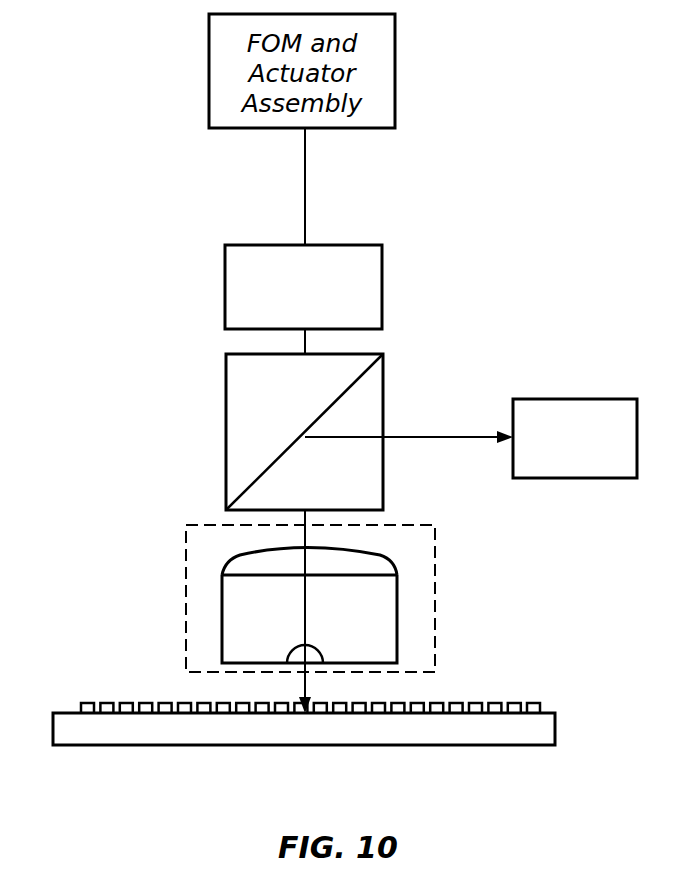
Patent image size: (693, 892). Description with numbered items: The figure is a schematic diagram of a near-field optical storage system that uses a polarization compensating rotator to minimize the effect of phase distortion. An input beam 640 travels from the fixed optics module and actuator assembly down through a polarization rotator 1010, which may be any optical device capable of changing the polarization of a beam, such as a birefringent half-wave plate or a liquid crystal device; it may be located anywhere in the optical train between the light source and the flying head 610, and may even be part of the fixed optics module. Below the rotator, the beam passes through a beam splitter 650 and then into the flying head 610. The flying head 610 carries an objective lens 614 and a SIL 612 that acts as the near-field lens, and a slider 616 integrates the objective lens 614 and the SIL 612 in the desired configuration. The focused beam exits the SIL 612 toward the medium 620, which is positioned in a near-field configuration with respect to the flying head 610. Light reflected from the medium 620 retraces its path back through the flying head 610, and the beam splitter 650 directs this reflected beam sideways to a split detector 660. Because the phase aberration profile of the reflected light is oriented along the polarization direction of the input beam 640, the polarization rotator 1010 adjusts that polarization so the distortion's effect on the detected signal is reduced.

The input beam 640 is at (305, 215).
The polarization compensating rotator 1010 is at (382, 297).
The beam splitter 650 is at (226, 415).
The split detector 660 is at (575, 399).
The flying head 610 is at (186, 562).
The SIL 612 is at (318, 650).
The objective lens 614 is at (378, 557).
The slider 616 is at (222, 618).
The medium 620 is at (555, 733).